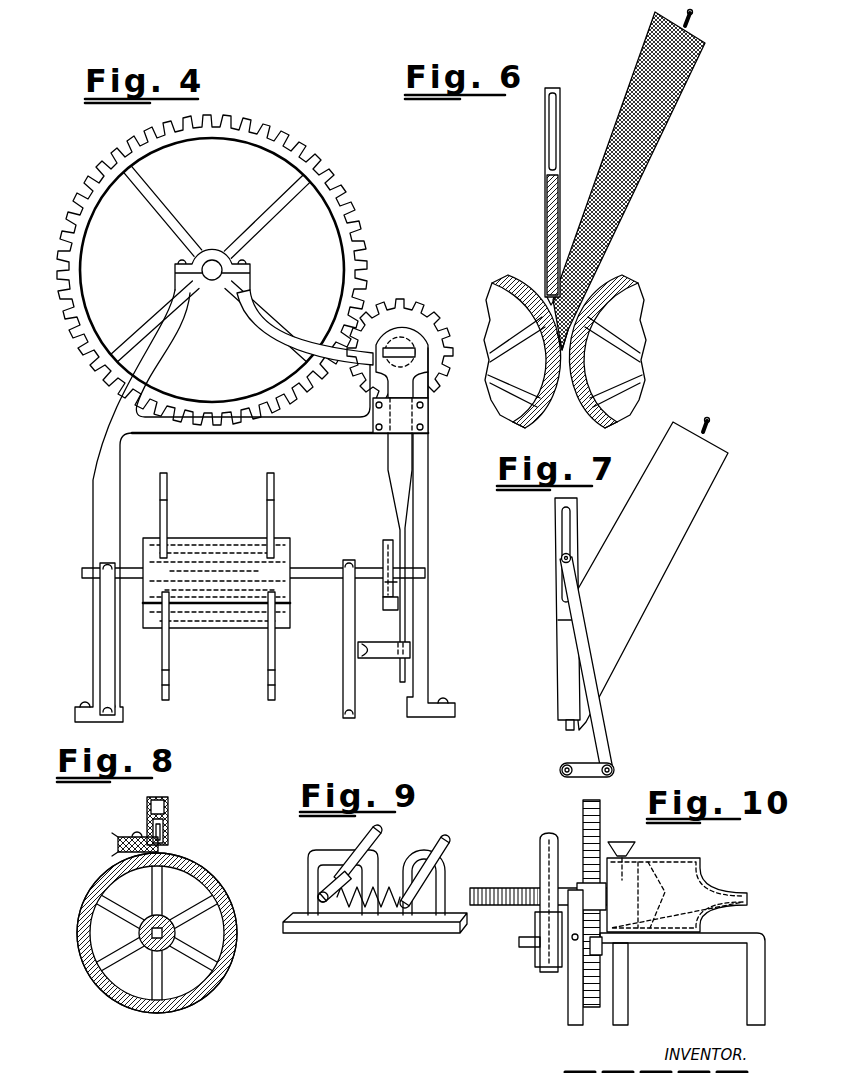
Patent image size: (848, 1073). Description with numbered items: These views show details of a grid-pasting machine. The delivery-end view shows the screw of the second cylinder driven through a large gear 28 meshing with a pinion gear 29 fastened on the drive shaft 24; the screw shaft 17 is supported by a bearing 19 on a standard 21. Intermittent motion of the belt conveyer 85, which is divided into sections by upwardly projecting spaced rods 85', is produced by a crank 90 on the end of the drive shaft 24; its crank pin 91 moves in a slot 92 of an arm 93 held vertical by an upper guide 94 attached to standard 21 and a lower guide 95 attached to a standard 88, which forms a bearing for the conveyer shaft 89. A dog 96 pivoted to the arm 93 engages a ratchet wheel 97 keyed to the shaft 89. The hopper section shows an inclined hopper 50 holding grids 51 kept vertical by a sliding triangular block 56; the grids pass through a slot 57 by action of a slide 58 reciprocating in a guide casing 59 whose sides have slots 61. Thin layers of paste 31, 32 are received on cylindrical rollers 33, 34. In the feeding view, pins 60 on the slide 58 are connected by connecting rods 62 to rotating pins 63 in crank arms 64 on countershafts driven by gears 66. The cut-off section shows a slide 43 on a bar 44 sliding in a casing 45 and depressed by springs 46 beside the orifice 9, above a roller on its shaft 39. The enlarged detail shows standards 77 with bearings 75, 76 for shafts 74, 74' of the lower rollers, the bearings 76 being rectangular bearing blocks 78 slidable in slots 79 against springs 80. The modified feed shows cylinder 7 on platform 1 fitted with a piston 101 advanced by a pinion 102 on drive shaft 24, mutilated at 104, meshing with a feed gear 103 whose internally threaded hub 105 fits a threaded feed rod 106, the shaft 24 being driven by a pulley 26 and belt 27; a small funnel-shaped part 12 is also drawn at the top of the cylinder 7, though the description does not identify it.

In FIG. 4, the large gear 28 is at (173, 140).
In FIG. 4, the bearing 19 is at (212, 260).
In FIG. 4, the shaft 17 is at (213, 280).
In FIG. 4, the standard 21 is at (160, 362).
In FIG. 4, the pinion gear 29 is at (380, 300).
In FIG. 4, the crank 90 is at (400, 347).
In FIG. 4, the crank pin 91 is at (413, 345).
In FIG. 4, the slot 92 is at (385, 358).
In FIG. 4, the arm 93 is at (405, 457).
In FIG. 4, the upper guide 94 is at (380, 433).
In FIG. 4, the shaft 89 is at (325, 566).
In FIG. 4, the belt conveyer 85 is at (216, 607).
In FIG. 4, the spaced rods 85' is at (217, 586).
In FIG. 4, the standards 88 is at (110, 662).
In FIG. 4, the ratchet wheel 97 is at (383, 548).
In FIG. 4, the dog 96 is at (387, 581).
In FIG. 4, the lower guide 95 is at (376, 661).
In FIG. 6, the inclined hopper 50 is at (615, 93).
In FIG. 7, the inclined hopper 50 is at (647, 574).
In FIG. 6, the sliding triangular block 56 is at (683, 65).
In FIG. 6, the guide casing 59 is at (545, 140).
In FIG. 7, the guide casing 59 is at (553, 520).
In FIG. 6, the slots 61 is at (557, 125).
In FIG. 7, the slots 61 is at (571, 518).
In FIG. 6, the slide 58 is at (547, 200).
In FIG. 7, the slide 58 is at (556, 585).
In FIG. 6, the slot 57 is at (548, 290).
In FIG. 6, the grids 51 is at (622, 185).
In FIG. 7, the grids 51 is at (565, 723).
In FIG. 6, the thin layer of paste 31 is at (506, 273).
In FIG. 8, the thin layer of paste 31 is at (215, 874).
In FIG. 6, the thin layer of paste 32 is at (614, 273).
In FIG. 6, the cylindrical roller 33 is at (533, 395).
In FIG. 8, the cylindrical roller 33 is at (78, 930).
In FIG. 6, the cylindrical roller 34 is at (617, 397).
In FIG. 7, the pins 60 is at (562, 556).
In FIG. 7, the connecting rods 62 is at (587, 640).
In FIG. 7, the crank arms 64 is at (587, 764).
In FIG. 7, the rotating pins 63 is at (613, 770).
In FIG. 7, the gears 66 is at (562, 773).
In FIG. 8, the casing 45 is at (167, 800).
In FIG. 8, the springs 46 is at (147, 808).
In FIG. 8, the bar 44 is at (167, 818).
In FIG. 8, the slide 43 is at (167, 828).
In FIG. 8, the orifice 9 is at (167, 848).
In FIG. 8, the shaft 39 is at (178, 933).
In FIG. 9, the standards 77 is at (392, 927).
In FIG. 9, the bearings 76 is at (310, 870).
In FIG. 9, the bearings 75 is at (432, 888).
In FIG. 9, the springs 80 is at (370, 899).
In FIG. 9, the shaft 74 is at (355, 851).
In FIG. 9, the shaft 74' is at (449, 871).
In FIG. 9, the rectangular bearing blocks 78 is at (338, 872).
In FIG. 9, the slots 79 is at (322, 878).
In FIG. 10, the belt 27 is at (546, 881).
In FIG. 10, the feed gear 103 is at (596, 815).
In FIG. 10, the internally threaded hub 105 is at (584, 889).
In FIG. 10, the pulley 26 is at (538, 960).
In FIG. 10, the threaded feed rod 106 is at (515, 910).
In FIG. 10, the pinion 102 is at (582, 968).
In FIG. 10, the cylinder 7 is at (680, 863).
In FIG. 10, the piston 101 is at (668, 895).
In FIG. 10, the funnel 12 is at (636, 848).
In FIG. 10, the platform 1 is at (741, 945).
In FIG. 10, the drive shaft 24 is at (680, 943).
In FIG. 10, the mutilated portion 104 is at (602, 938).